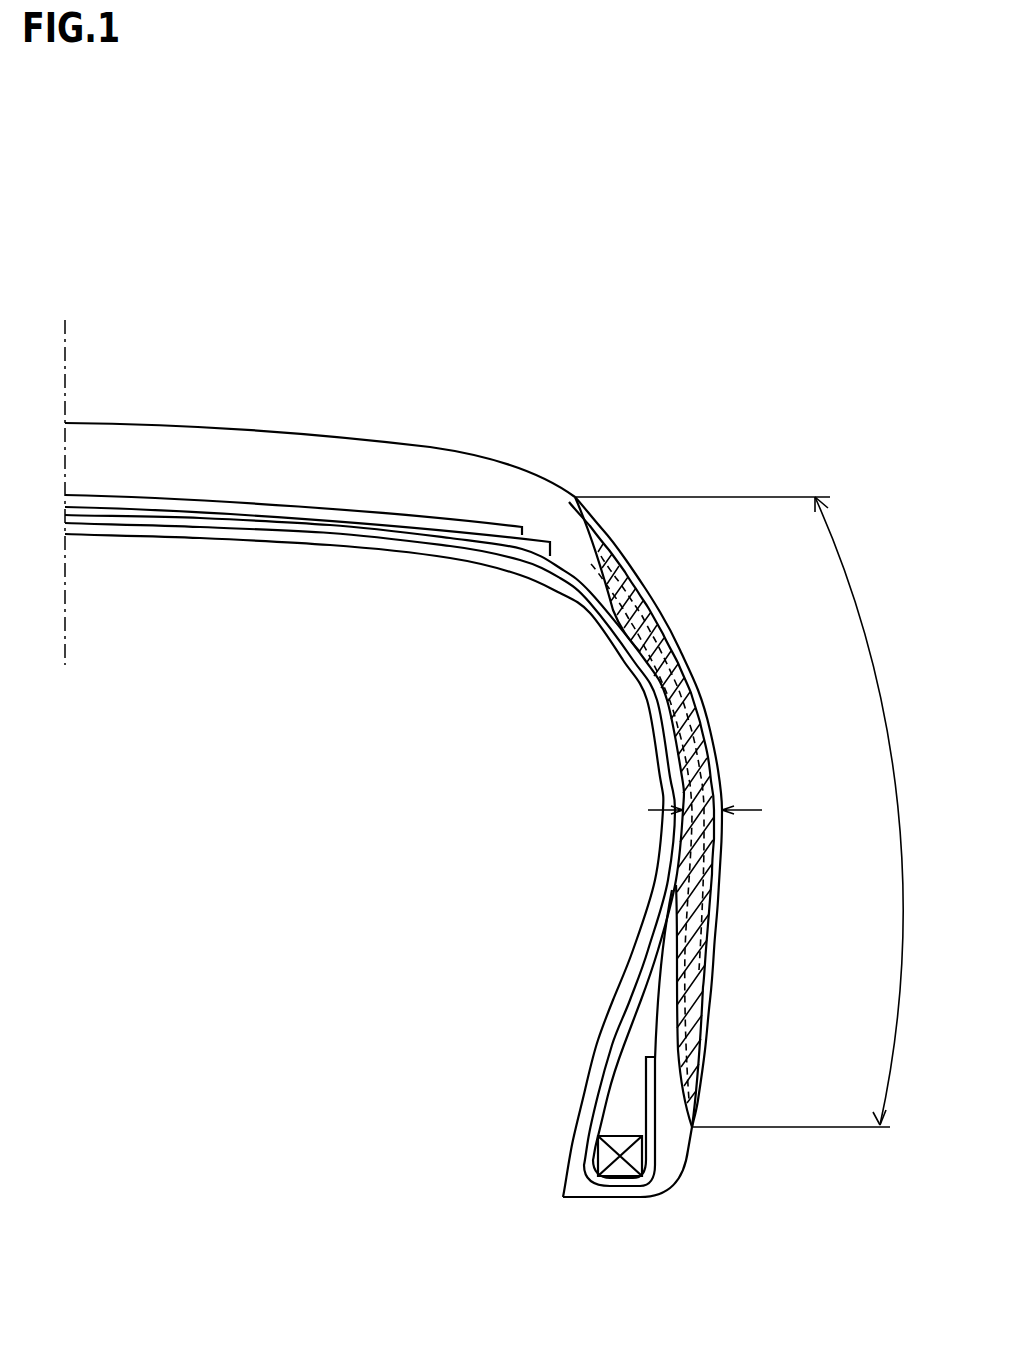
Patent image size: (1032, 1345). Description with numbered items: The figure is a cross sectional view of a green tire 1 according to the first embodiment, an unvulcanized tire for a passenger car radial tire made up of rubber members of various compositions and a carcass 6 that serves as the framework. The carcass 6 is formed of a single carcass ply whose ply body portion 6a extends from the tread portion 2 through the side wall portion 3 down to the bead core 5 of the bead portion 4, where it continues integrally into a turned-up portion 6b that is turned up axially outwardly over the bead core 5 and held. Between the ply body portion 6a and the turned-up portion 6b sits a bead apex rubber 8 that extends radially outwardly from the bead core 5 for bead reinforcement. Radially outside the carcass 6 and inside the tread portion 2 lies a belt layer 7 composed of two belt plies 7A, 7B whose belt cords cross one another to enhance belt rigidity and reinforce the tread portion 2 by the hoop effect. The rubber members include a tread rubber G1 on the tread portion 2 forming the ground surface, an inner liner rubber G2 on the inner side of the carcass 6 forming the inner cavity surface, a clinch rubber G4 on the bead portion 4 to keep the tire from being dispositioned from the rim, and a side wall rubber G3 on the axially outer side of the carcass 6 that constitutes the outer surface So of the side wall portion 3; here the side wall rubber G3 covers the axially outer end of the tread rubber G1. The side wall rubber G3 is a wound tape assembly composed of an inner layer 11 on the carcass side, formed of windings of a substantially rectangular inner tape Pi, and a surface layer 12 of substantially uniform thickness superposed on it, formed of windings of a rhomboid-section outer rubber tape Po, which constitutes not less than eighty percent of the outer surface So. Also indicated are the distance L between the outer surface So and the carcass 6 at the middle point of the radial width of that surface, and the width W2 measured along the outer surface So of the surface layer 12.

The green tire 1 is at (559, 389).
The tread portion 2 is at (316, 405).
The side wall portion 3 is at (708, 812).
The bead portion 4 is at (605, 1184).
The bead core 5 is at (617, 1167).
The carcass 6 is at (374, 850).
The ply body portion 6a is at (643, 993).
The turned-up portion 6b is at (657, 1065).
The belt layer 7 is at (232, 348).
The belt ply 7A is at (207, 513).
The belt ply 7B is at (148, 500).
The bead apex rubber 8 is at (620, 1097).
The inner layer 11 is at (700, 778).
The surface layer 12 is at (717, 731).
The tread rubber G1 is at (383, 468).
The inner liner rubber G2 is at (545, 578).
The side wall rubber G3 is at (718, 812).
The clinch rubber G4 is at (668, 1153).
The inner tape Pi is at (660, 562).
The outer rubber tape Po is at (668, 617).
The outer surface of the side wall portion So is at (724, 866).
The distance between the outer surface and the carcass L is at (691, 815).
The width measured along the outer surface W2 is at (898, 938).